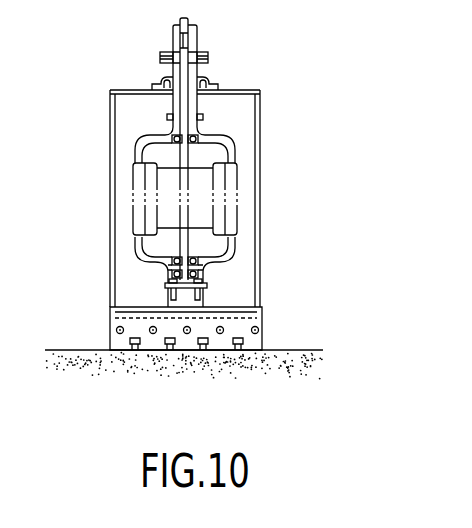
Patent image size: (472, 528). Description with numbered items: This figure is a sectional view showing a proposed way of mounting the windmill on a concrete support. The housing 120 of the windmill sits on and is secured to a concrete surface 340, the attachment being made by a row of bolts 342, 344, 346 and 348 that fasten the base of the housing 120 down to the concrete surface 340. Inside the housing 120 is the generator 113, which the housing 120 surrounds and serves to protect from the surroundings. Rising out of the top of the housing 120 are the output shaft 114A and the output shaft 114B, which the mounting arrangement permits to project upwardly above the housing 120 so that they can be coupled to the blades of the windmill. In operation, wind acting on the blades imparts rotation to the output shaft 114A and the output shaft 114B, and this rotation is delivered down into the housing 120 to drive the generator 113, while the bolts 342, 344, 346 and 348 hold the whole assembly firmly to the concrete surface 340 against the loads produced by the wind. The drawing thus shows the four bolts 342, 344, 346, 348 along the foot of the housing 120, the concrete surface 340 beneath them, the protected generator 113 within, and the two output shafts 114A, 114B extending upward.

The generator 113 is at (252, 162).
The output shaft 114A is at (199, 40).
The output shaft 114B is at (180, 88).
The housing 120 is at (261, 196).
The concrete surface 340 is at (287, 365).
The bolt 342 is at (126, 349).
The bolt 344 is at (170, 352).
The bolt 346 is at (204, 352).
The bolt 348 is at (239, 336).